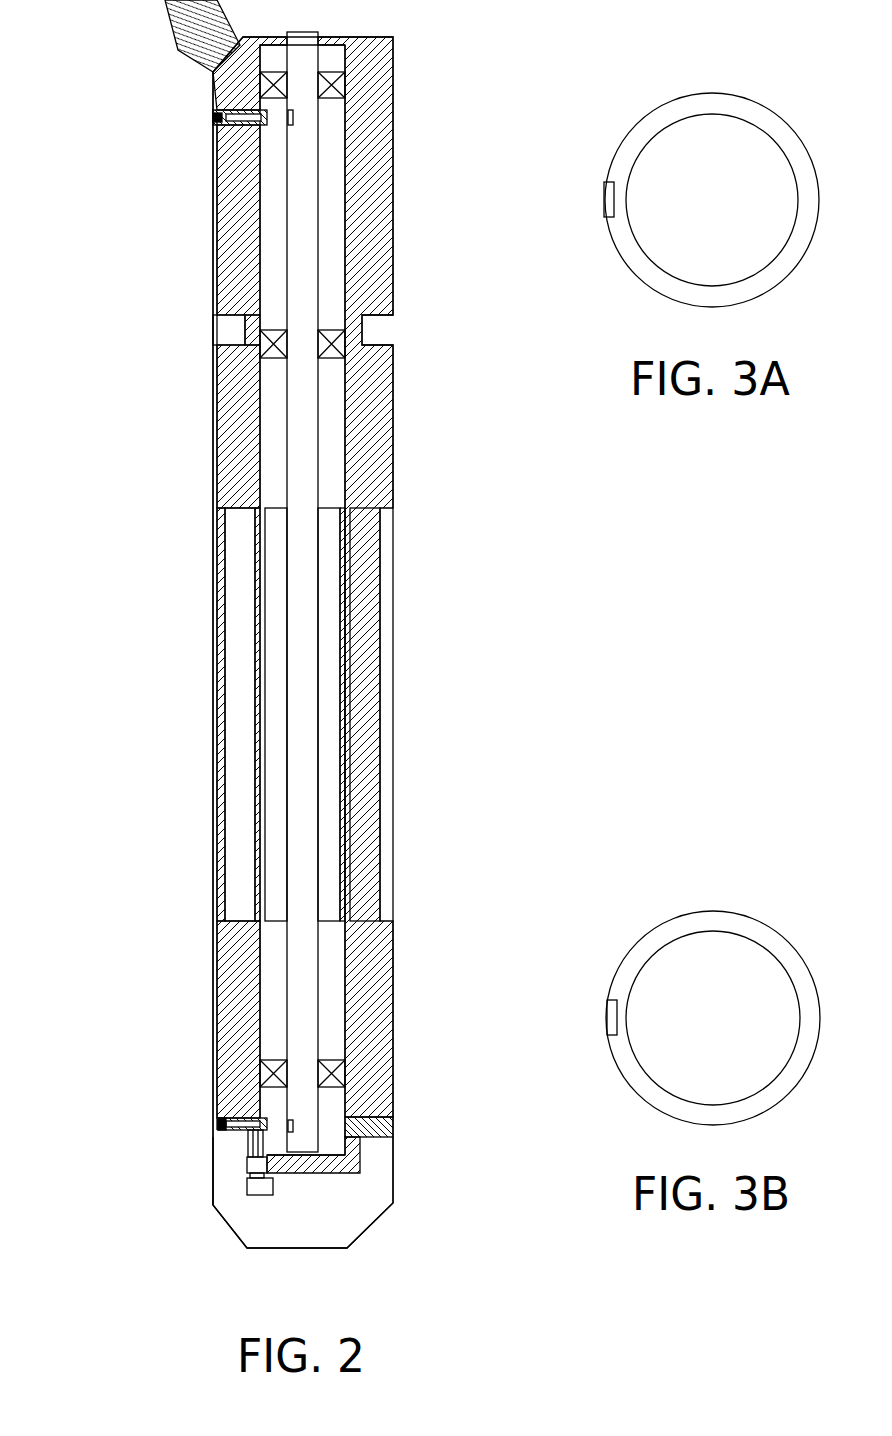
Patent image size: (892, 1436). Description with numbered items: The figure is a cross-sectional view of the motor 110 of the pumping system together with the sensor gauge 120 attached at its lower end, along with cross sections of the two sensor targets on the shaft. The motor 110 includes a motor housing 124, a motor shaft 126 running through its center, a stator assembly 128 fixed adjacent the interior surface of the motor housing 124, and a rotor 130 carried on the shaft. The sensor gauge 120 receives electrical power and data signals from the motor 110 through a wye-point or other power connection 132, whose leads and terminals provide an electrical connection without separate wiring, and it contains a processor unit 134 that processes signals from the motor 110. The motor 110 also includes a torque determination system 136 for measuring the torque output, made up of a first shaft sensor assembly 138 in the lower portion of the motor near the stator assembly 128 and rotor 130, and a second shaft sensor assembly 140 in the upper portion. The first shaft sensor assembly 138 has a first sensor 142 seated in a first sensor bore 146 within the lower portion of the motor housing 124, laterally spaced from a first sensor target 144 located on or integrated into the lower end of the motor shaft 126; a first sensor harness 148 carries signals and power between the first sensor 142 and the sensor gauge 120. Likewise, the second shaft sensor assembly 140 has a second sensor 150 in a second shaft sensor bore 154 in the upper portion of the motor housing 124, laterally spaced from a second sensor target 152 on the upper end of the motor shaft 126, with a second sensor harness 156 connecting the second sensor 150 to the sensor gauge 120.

In FIG. 2, the motor 110 is at (112, 820).
In FIG. 2, the sensor gauge 120 is at (393, 1150).
In FIG. 2, the motor housing 124 is at (393, 806).
In FIG. 2, the motor shaft 126 is at (303, 733).
In FIG. 3A, the motor shaft 126 is at (716, 92).
In FIG. 3B, the motor shaft 126 is at (726, 915).
In FIG. 2, the stator assembly 128 is at (233, 627).
In FIG. 2, the rotor 130 is at (273, 550).
In FIG. 2, the power connection 132 is at (255, 1165).
In FIG. 2, the processor unit 134 is at (257, 1188).
In FIG. 2, the torque determination system 136 is at (362, 706).
In FIG. 2, the first shaft sensor assembly 138 is at (222, 1169).
In FIG. 2, the second shaft sensor assembly 140 is at (281, 126).
In FIG. 2, the first sensor 142 is at (243, 1123).
In FIG. 2, the first sensor target 144 is at (292, 1125).
In FIG. 3A, the first sensor target 144 is at (603, 183).
In FIG. 2, the first sensor bore 146 is at (228, 1115).
In FIG. 2, the first sensor harness 148 is at (263, 1140).
In FIG. 2, the second sensor 150 is at (240, 120).
In FIG. 2, the second sensor target 152 is at (291, 115).
In FIG. 3B, the second sensor target 152 is at (608, 1002).
In FIG. 2, the second shaft sensor bore 154 is at (222, 110).
In FIG. 2, the second sensor harness 156 is at (213, 935).